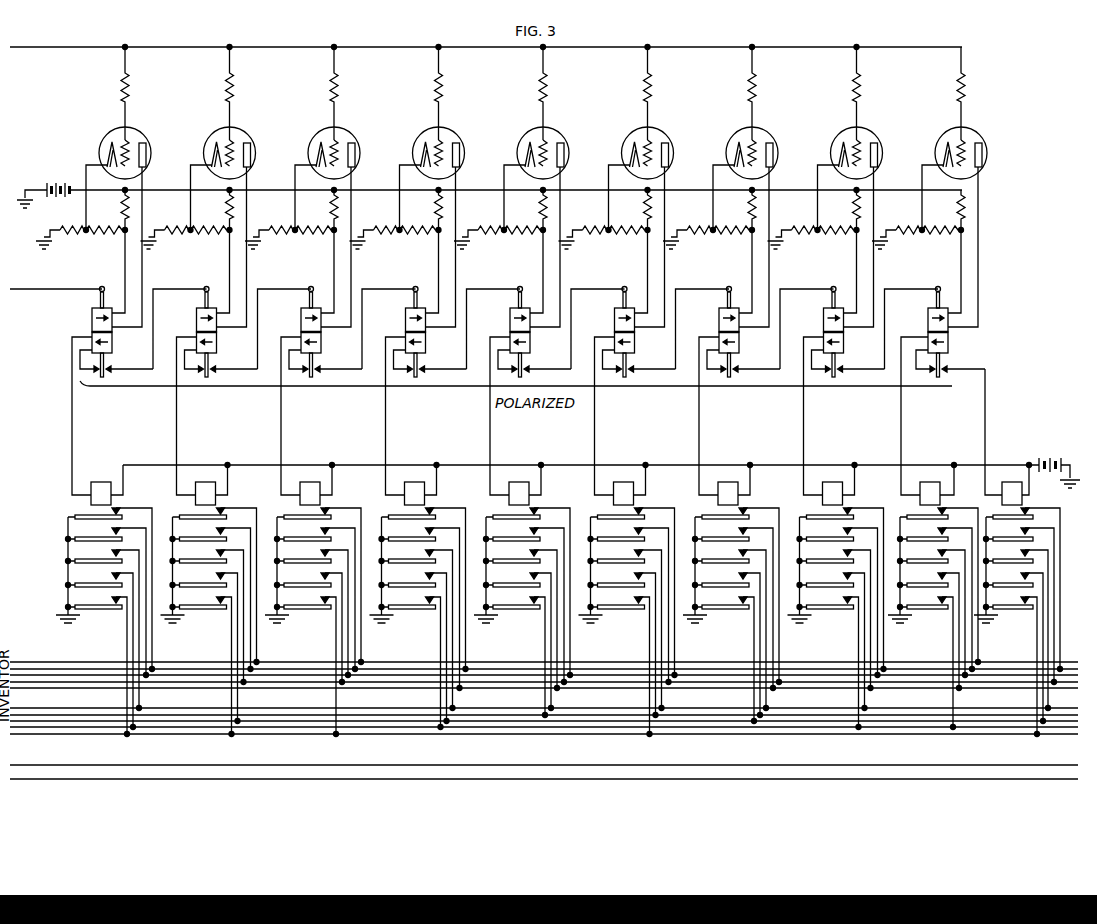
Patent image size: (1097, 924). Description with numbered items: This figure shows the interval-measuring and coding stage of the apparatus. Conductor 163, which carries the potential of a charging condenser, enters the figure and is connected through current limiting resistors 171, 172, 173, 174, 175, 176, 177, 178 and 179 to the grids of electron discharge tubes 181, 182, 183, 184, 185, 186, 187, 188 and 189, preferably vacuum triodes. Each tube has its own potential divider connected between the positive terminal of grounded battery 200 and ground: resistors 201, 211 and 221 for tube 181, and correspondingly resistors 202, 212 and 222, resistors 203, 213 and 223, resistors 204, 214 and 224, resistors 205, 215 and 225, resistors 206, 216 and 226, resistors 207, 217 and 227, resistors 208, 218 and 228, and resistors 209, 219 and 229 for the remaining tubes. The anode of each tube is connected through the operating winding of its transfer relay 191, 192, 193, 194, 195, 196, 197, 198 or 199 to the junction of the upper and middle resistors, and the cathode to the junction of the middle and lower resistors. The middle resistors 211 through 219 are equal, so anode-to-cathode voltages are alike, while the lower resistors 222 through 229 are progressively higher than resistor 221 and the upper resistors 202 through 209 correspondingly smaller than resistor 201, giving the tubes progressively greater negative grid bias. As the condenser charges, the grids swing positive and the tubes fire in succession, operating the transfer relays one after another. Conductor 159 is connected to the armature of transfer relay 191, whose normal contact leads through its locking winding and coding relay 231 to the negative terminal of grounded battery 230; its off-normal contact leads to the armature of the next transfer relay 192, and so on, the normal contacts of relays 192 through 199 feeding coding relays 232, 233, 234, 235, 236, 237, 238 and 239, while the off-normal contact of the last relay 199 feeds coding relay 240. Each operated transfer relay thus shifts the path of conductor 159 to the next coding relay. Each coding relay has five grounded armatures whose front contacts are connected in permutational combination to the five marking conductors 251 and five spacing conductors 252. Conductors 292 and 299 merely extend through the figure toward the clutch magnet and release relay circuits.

The conductor 163 is at (92, 47).
The conductor 159 is at (50, 288).
The current limiting resistor 171 is at (120, 86).
The current limiting resistor 172 is at (204, 93).
The current limiting resistor 173 is at (308, 93).
The current limiting resistor 174 is at (413, 93).
The current limiting resistor 175 is at (517, 93).
The current limiting resistor 176 is at (622, 93).
The current limiting resistor 177 is at (726, 93).
The current limiting resistor 178 is at (831, 93).
The current limiting resistor 179 is at (935, 93).
The electron discharge tube 181 is at (101, 146).
The electron discharge tube 182 is at (212, 226).
The electron discharge tube 183 is at (316, 226).
The electron discharge tube 184 is at (421, 226).
The electron discharge tube 185 is at (525, 226).
The electron discharge tube 186 is at (630, 226).
The electron discharge tube 187 is at (734, 226).
The electron discharge tube 188 is at (839, 226).
The electron discharge tube 189 is at (943, 226).
The transfer relay 191 is at (91, 318).
The transfer relay 192 is at (233, 391).
The transfer relay 193 is at (337, 391).
The transfer relay 194 is at (442, 391).
The transfer relay 195 is at (546, 391).
The transfer relay 196 is at (651, 391).
The transfer relay 197 is at (755, 391).
The transfer relay 198 is at (860, 391).
The transfer relay 199 is at (944, 391).
The grounded battery 200 is at (61, 180).
The resistor 201 is at (129, 207).
The resistor 202 is at (247, 251).
The resistor 203 is at (351, 251).
The resistor 204 is at (456, 251).
The resistor 205 is at (560, 251).
The resistor 206 is at (665, 251).
The resistor 207 is at (769, 251).
The resistor 208 is at (874, 251).
The resistor 209 is at (978, 251).
The resistor 211 is at (108, 236).
The resistor 212 is at (209, 240).
The resistor 213 is at (313, 240).
The resistor 214 is at (418, 240).
The resistor 215 is at (522, 240).
The resistor 216 is at (627, 240).
The resistor 217 is at (731, 240).
The resistor 218 is at (836, 240).
The resistor 219 is at (940, 240).
The resistor 221 is at (63, 241).
The resistor 222 is at (166, 246).
The resistor 223 is at (270, 246).
The resistor 224 is at (375, 246).
The resistor 225 is at (479, 246).
The resistor 226 is at (584, 246).
The resistor 227 is at (688, 246).
The resistor 228 is at (793, 246).
The resistor 229 is at (897, 246).
The grounded battery 230 is at (1064, 444).
The coding relay 231 is at (105, 482).
The coding relay 232 is at (210, 595).
The coding relay 233 is at (314, 595).
The coding relay 234 is at (419, 592).
The coding relay 235 is at (523, 586).
The coding relay 236 is at (628, 595).
The coding relay 237 is at (732, 589).
The coding relay 238 is at (837, 592).
The coding relay 239 is at (934, 587).
The coding relay 240 is at (1018, 590).
The conductors 251 is at (67, 689).
The conductors 252 is at (49, 735).
The conductor 292 is at (117, 765).
The conductor 299 is at (247, 779).